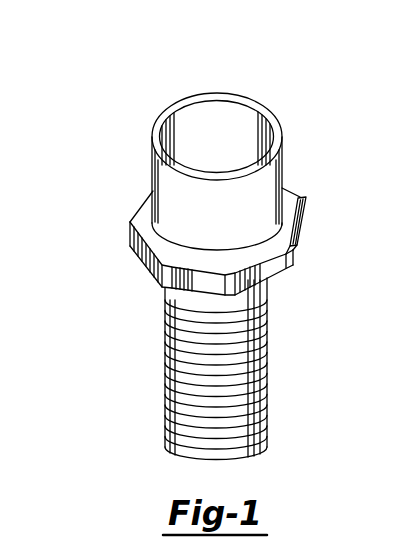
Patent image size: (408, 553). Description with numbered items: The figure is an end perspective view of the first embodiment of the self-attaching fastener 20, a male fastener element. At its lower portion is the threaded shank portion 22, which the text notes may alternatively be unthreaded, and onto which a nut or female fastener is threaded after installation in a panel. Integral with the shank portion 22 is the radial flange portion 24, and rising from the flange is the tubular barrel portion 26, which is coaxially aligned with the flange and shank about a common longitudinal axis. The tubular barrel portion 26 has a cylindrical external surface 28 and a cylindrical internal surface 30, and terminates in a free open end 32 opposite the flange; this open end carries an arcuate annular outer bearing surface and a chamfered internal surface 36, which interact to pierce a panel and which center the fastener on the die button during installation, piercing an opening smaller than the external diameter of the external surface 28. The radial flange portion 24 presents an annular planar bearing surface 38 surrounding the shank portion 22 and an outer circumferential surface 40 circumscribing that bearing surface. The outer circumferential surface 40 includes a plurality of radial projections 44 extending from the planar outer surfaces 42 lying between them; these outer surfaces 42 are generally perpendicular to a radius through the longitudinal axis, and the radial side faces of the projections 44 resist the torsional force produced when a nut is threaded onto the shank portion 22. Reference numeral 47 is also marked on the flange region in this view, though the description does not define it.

The self-attaching fastener 20 is at (211, 368).
The threaded shank portion 22 is at (228, 390).
The radial flange portion 24 is at (210, 264).
The tubular barrel portion 26 is at (289, 167).
The cylindrical external surface 28 is at (162, 177).
The cylindrical internal surface 30 is at (194, 106).
The free open end 32 is at (241, 101).
The chamfered internal surface 36 is at (228, 93).
The annular planar bearing surface 38 is at (283, 268).
The outer circumferential surface 40 is at (314, 210).
The outer surfaces 42 is at (155, 260).
The radial projections 44 is at (240, 290).
The tab base 47 is at (293, 263).